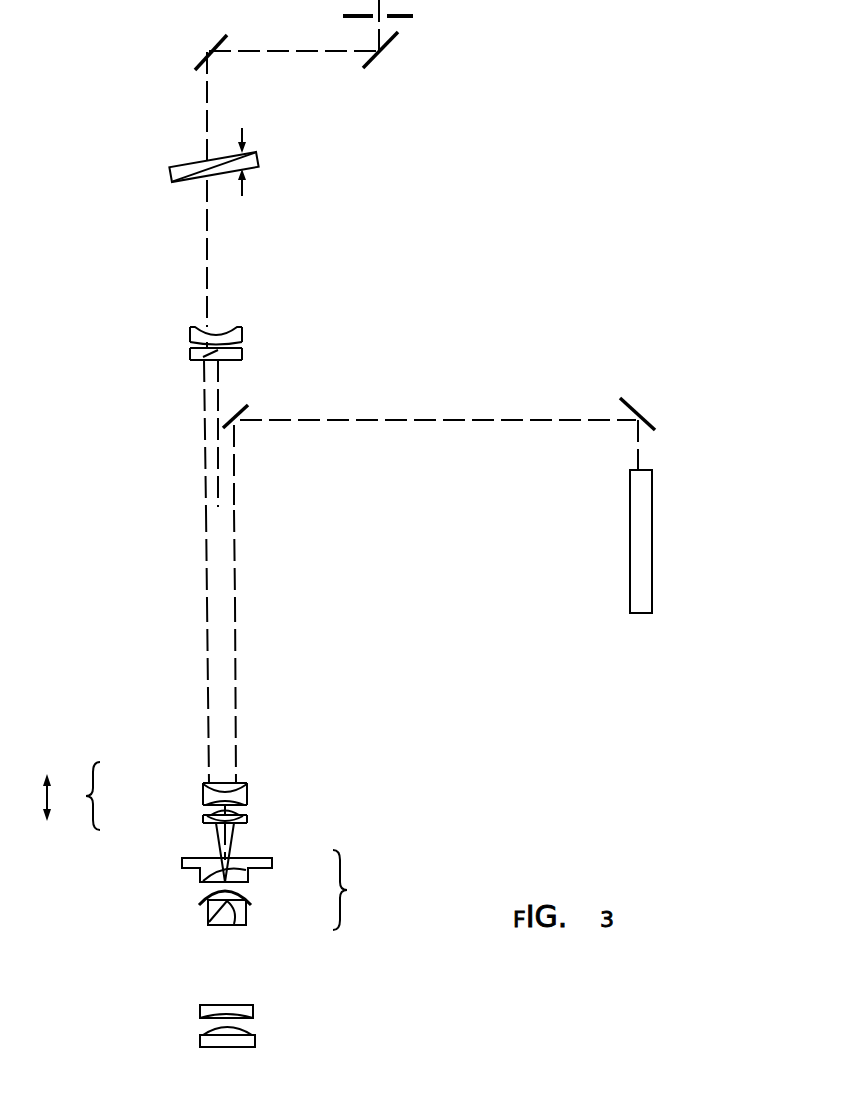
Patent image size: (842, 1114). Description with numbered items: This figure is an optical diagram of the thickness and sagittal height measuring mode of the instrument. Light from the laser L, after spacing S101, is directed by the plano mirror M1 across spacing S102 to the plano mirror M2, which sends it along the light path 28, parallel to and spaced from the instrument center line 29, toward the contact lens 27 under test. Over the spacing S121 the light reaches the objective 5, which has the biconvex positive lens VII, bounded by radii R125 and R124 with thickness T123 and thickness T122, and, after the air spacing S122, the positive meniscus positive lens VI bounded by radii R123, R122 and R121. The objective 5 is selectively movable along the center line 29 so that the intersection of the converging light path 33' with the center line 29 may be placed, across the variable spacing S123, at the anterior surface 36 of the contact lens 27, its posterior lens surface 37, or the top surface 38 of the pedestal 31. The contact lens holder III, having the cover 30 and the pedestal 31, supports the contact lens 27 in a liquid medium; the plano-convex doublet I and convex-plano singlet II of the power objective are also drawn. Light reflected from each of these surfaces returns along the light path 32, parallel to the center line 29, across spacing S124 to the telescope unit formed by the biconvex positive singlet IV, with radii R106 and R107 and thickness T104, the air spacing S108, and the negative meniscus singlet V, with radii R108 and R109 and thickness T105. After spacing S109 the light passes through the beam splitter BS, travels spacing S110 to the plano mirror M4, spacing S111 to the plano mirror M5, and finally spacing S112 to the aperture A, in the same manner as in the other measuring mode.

The aperture A is at (415, 16).
The spacing S112 is at (376, 22).
The plano mirror M5 is at (381, 57).
The spacing S111 is at (278, 52).
The plano mirror M4 is at (222, 40).
The spacing S110 is at (207, 107).
The beam splitter BS is at (172, 176).
The spacing S109 is at (207, 238).
The negative meniscus singlet V is at (244, 313).
The radius R109 is at (228, 328).
The thickness T105 is at (196, 327).
The radius R108 is at (242, 336).
The spacing S108 is at (213, 345).
The biconvex positive singlet IV is at (245, 372).
The radius R107 is at (242, 349).
The thickness T104 is at (196, 358).
The radius R106 is at (228, 361).
The laser L is at (652, 538).
The spacing S101 is at (634, 440).
The plano mirror M1 is at (640, 400).
The spacing S102 is at (372, 421).
The plano mirror M2 is at (243, 426).
The instrument center line 29 is at (220, 485).
The light path 32 is at (207, 532).
The light path 28 is at (235, 570).
The spacing S124 is at (208, 618).
The spacing S121 is at (235, 625).
The objective 5 is at (71, 796).
The biconvex positive lens VII is at (271, 760).
The radius R125 is at (239, 782).
The thickness T123 is at (215, 782).
The thickness T122 is at (205, 790).
The radius R124 is at (246, 792).
The spacing S122 is at (205, 808).
The positive meniscus lens VI is at (292, 812).
The radius R123 is at (247, 812).
The radius R122 is at (249, 821).
The spacing S123 is at (218, 829).
The radius R121 is at (240, 827).
The contact lens holder III is at (360, 890).
The cover 30 is at (182, 862).
The converging light path 33' is at (257, 885).
The anterior surface 36 is at (205, 897).
The top surface 38 is at (246, 915).
The posterior lens surface 37 is at (210, 916).
The pedestal 31 is at (237, 925).
The contact lens 27 is at (137, 929).
The convex-plano singlet II is at (286, 1003).
The plano-convex doublet I is at (284, 1032).